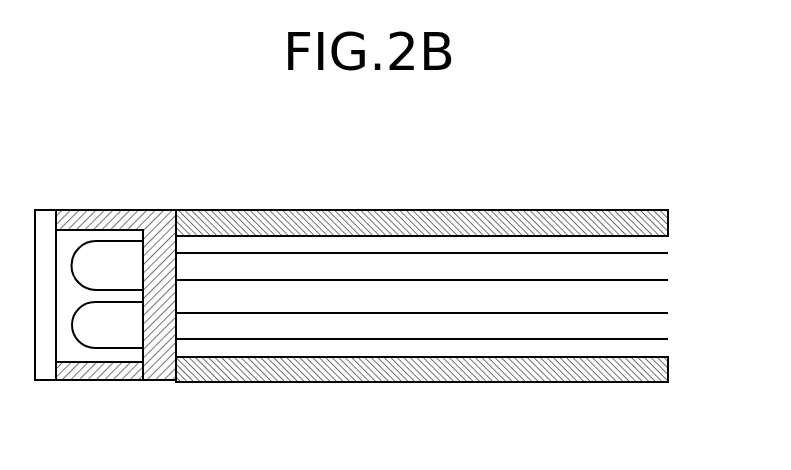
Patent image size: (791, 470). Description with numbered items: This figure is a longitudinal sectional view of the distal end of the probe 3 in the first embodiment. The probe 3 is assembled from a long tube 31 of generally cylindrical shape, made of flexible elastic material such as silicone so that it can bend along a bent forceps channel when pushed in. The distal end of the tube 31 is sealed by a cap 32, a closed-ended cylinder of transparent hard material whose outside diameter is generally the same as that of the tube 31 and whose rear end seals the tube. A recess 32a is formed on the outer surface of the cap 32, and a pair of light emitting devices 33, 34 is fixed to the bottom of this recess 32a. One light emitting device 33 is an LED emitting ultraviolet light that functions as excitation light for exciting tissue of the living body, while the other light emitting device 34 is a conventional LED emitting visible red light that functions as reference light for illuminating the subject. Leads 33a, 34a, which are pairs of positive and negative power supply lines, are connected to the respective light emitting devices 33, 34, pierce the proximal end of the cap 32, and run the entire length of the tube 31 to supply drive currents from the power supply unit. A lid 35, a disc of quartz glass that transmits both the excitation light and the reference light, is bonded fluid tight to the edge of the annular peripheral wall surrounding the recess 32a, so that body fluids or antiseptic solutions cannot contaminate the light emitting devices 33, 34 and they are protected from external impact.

The probe 3 is at (436, 189).
The tube 31 is at (265, 210).
The cap 32 is at (163, 210).
The recess 32a is at (67, 348).
The light emitting device 33 is at (98, 241).
The lead 33a is at (530, 253).
The light emitting device 34 is at (132, 350).
The lead 34a is at (265, 340).
The lid 35 is at (48, 210).